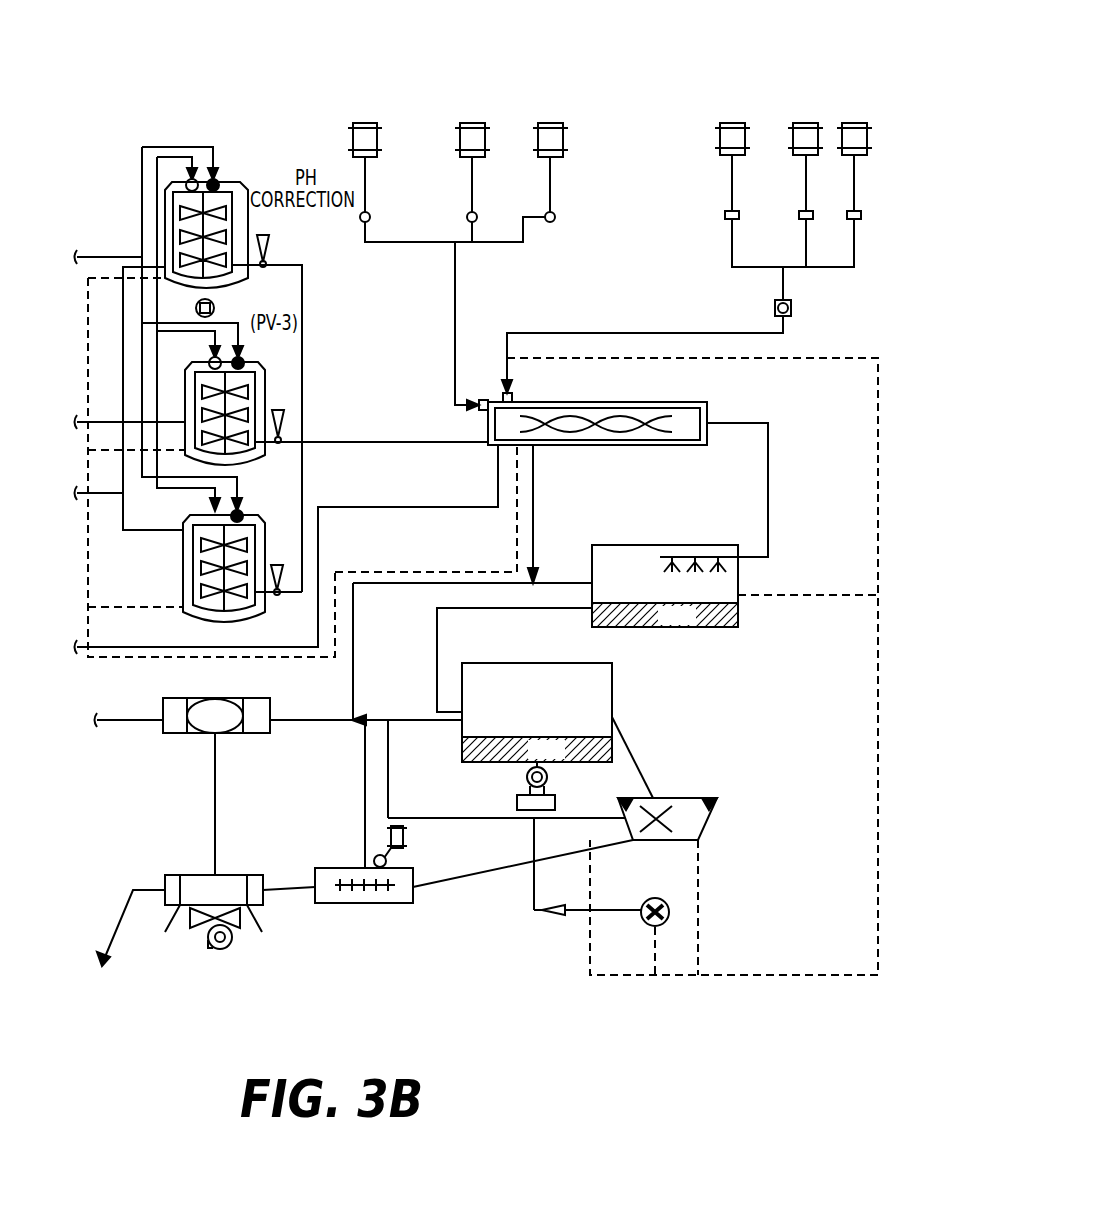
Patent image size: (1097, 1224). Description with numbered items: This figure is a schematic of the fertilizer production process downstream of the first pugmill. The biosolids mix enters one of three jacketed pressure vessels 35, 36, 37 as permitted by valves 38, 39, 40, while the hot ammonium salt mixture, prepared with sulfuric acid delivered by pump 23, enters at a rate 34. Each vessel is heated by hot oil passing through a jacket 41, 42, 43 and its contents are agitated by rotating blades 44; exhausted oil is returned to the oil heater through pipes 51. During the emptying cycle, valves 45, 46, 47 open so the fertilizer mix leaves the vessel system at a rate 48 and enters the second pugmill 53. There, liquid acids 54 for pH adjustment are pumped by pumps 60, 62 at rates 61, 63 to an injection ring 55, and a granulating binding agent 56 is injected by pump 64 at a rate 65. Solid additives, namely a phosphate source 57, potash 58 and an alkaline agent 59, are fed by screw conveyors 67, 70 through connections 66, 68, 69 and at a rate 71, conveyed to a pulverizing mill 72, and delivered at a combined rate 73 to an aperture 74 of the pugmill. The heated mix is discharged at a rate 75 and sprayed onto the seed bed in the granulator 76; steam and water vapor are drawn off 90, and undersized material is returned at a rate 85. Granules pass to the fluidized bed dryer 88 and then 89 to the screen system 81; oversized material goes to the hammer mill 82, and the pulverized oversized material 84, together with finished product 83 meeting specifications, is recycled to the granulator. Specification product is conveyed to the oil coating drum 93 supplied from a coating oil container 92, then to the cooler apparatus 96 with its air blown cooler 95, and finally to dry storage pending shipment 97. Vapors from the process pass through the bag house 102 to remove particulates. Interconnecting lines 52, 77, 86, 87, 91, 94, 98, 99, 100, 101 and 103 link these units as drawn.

The pump 23 is at (108, 490).
The ammonium salt mixture feed rate 34 is at (114, 249).
The pressure vessel 35 is at (178, 572).
The pressure vessel 36 is at (279, 409).
The pressure vessel 37 is at (267, 237).
The valve 38 is at (188, 334).
The valve 39 is at (209, 360).
The valve 40 is at (186, 186).
The jacket 41 is at (246, 513).
The jacket 42 is at (246, 361).
The jacket 43 is at (220, 182).
The rotating blades 44 is at (277, 565).
The valve 45 is at (278, 605).
The valve 46 is at (239, 426).
The valve 47 is at (302, 312).
The discharge rate 48 is at (396, 448).
The pipes 51 is at (466, 560).
The transfer line 52 is at (148, 644).
The pugmill 53 is at (544, 446).
The acids 54 is at (362, 122).
The injection ring 55 is at (471, 122).
The granulating binding agent 56 is at (558, 122).
The diammonium phosphate tank 57 is at (730, 123).
The potash 58 is at (805, 123).
The alkaline agent 59 is at (854, 123).
The pump 60 is at (370, 214).
The pumping rate 61 is at (400, 242).
The pump 62 is at (467, 214).
The pumping rate 63 is at (477, 241).
The pump 64 is at (556, 222).
The injection rate 65 is at (525, 240).
The DAP feeder valve 66 is at (725, 215).
The screw conveyor 67 is at (735, 252).
The KCL feeder valve 68 is at (799, 215).
The line 69 is at (809, 256).
The screw conveyor 70 is at (861, 215).
The alkaline agent feed rate 71 is at (858, 258).
The pulverizing mill 72 is at (774, 308).
The combined feed rate 73 is at (526, 331).
The aperture 74 is at (520, 394).
The granulator feed rate 75 is at (768, 514).
The granulator 76 is at (700, 545).
The line 77 is at (530, 606).
The screen system 81 is at (698, 796).
The hammer mill 82 is at (711, 932).
The finished product return 83 is at (642, 923).
The pulverized oversized material 84 is at (580, 910).
The undersized material return 85 is at (796, 599).
The boundary 86 is at (794, 356).
The line 87 is at (629, 727).
The fluidized bed dryer 88 is at (539, 662).
The dryer discharge 89 is at (545, 778).
The steam and water vapor draw-off 90 is at (565, 581).
The line 91 is at (535, 570).
The coating oil container 92 is at (533, 834).
The coating drum 93 is at (345, 863).
The oil cooling drum line 94 is at (295, 882).
The air blown cooler 95 is at (229, 944).
The cooler apparatus 96 is at (195, 875).
The shipment 97 is at (134, 908).
The line 98 is at (540, 821).
The line 99 is at (452, 818).
The line 100 is at (364, 760).
The line 101 is at (300, 716).
The bag house 102 is at (220, 696).
The line 103 is at (215, 794).